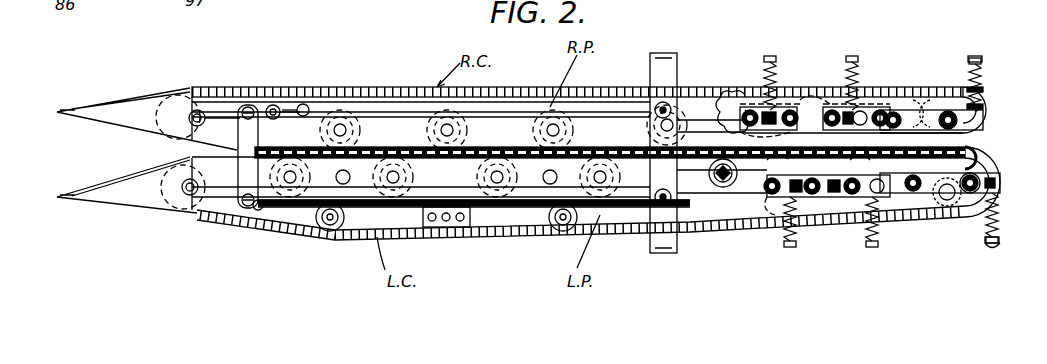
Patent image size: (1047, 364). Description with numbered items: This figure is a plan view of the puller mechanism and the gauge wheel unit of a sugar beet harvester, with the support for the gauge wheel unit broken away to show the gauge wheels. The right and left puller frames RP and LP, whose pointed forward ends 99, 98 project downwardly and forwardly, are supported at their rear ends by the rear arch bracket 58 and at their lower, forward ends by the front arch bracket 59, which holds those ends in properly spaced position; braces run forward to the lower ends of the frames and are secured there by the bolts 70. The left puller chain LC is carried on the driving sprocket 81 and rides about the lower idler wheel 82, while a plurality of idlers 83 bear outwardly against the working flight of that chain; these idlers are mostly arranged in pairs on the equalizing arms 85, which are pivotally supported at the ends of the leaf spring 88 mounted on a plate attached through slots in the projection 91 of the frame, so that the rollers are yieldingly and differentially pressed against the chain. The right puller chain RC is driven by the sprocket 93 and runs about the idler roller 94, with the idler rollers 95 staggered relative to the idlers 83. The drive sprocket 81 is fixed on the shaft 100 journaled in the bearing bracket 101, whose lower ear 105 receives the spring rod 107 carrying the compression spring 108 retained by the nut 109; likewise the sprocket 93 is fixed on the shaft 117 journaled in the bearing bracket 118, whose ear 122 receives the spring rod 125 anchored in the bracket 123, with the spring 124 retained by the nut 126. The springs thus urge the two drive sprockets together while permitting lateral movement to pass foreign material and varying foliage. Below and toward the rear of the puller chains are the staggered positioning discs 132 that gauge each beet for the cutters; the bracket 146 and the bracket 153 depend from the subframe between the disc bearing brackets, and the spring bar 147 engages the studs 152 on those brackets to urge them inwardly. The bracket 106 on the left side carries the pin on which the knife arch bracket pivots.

The upper pointed arm 99 is at (112, 102).
The lower pointed arm 98 is at (117, 197).
The idler roller 94 is at (177, 97).
The lower idler wheel 82 is at (167, 213).
The bolts 70 is at (273, 105).
The idlers 83 is at (305, 104).
The idler rollers 95 is at (378, 110).
The front arch bracket 59 is at (237, 170).
The equalizing arms 85 is at (293, 236).
The projection 91 is at (477, 227).
The leaf spring 88 is at (483, 208).
The rear arch bracket 58 is at (663, 233).
The positioning disc 132 is at (733, 103).
The bearing bracket 118 is at (933, 113).
The shaft 117 is at (947, 111).
The sprocket 93 is at (930, 108).
The nut 126 is at (973, 56).
The spring rod 125 is at (981, 77).
The spring 124 is at (982, 90).
The ear 122 is at (982, 107).
The bracket 123 is at (983, 130).
The bracket 106 is at (980, 153).
The ear 105 is at (990, 167).
The bracket 146 is at (837, 213).
The bearing bracket 101 is at (953, 197).
The shaft 100 is at (960, 200).
The driving sprocket 81 is at (947, 203).
The spring bar 147 is at (773, 227).
The bracket 153 is at (867, 200).
The spring rod 107 is at (982, 227).
The nut 109 is at (990, 240).
The compression spring 108 is at (998, 243).
The studs 152 is at (760, 216).